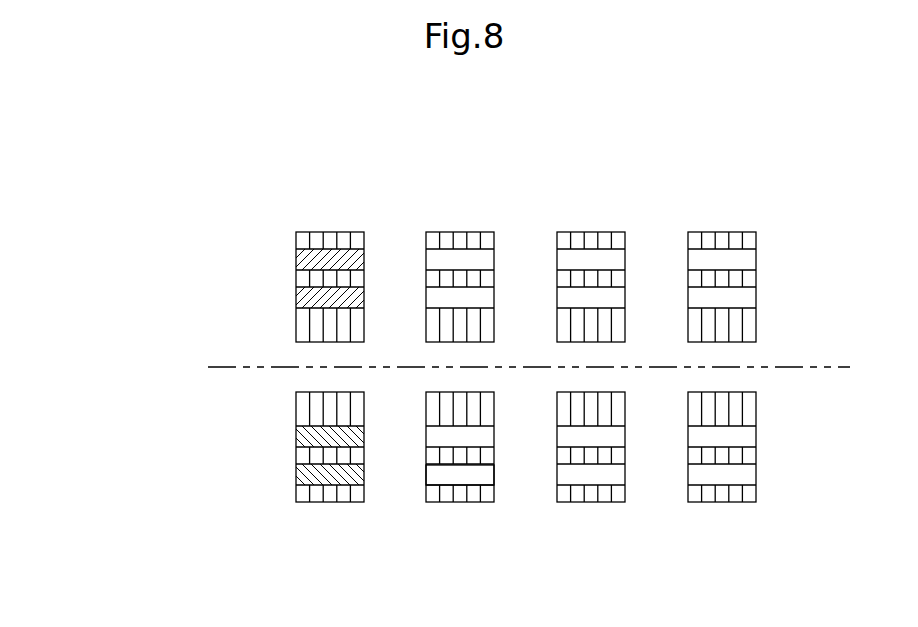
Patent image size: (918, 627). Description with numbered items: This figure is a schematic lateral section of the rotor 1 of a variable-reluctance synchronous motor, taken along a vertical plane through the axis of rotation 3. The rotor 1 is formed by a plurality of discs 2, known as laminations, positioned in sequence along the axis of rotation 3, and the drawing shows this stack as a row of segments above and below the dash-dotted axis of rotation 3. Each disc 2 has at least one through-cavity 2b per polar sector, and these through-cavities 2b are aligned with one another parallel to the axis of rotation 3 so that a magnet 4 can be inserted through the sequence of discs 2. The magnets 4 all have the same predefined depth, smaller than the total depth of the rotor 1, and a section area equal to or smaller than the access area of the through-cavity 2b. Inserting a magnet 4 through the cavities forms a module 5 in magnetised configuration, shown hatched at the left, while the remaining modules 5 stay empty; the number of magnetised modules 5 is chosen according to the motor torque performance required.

The rotor 1 is at (151, 168).
The disc 2 is at (434, 495).
The through-cavity 2b is at (487, 477).
The axis of rotation 3 is at (237, 367).
The magnet 4 is at (307, 473).
The module 5 is at (467, 219).